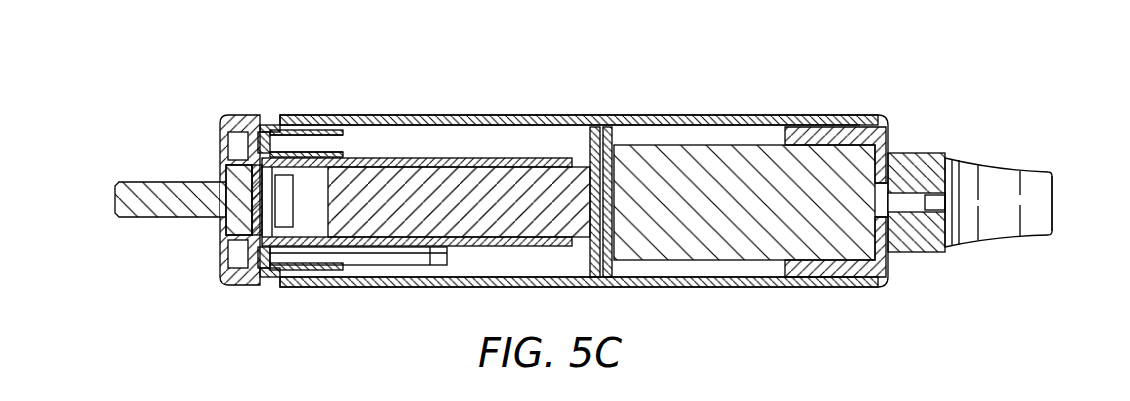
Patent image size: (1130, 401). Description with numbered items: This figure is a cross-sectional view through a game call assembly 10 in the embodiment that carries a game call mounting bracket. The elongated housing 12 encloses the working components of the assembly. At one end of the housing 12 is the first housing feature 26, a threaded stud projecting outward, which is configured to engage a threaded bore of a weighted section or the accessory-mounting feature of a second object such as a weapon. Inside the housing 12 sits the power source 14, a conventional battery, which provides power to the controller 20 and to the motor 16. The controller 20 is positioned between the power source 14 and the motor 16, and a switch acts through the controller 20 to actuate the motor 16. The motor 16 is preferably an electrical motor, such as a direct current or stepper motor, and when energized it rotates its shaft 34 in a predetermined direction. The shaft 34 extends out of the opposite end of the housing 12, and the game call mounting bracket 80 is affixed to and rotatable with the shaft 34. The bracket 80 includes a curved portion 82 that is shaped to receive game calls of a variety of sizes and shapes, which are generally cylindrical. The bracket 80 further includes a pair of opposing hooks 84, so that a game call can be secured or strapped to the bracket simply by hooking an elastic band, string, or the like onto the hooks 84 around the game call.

The game call assembly 10 is at (607, 171).
The housing 12 is at (527, 115).
The power source 14 is at (440, 172).
The motor 16 is at (706, 150).
The controller 20 is at (592, 262).
The first housing feature 26 is at (175, 181).
The shaft 34 is at (903, 207).
The game call mounting bracket 80 is at (921, 150).
The curved portion 82 is at (1003, 170).
The opposing hooks 84 is at (1054, 205).